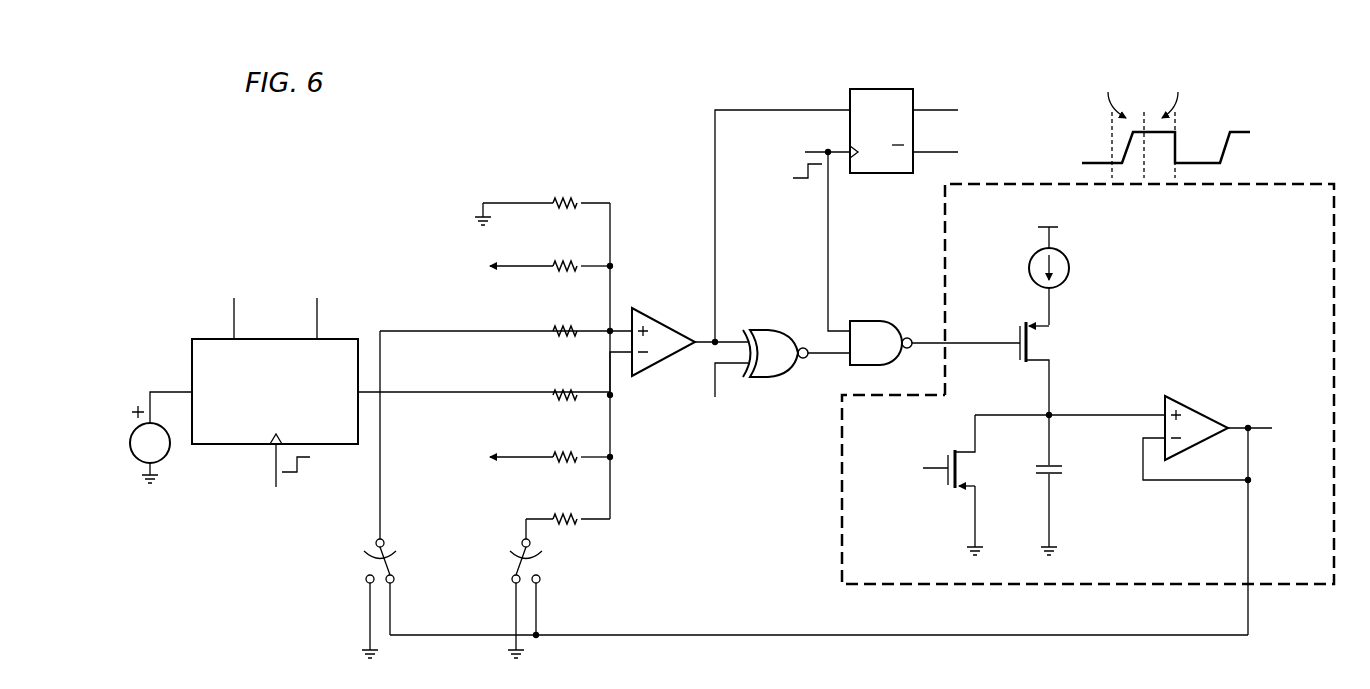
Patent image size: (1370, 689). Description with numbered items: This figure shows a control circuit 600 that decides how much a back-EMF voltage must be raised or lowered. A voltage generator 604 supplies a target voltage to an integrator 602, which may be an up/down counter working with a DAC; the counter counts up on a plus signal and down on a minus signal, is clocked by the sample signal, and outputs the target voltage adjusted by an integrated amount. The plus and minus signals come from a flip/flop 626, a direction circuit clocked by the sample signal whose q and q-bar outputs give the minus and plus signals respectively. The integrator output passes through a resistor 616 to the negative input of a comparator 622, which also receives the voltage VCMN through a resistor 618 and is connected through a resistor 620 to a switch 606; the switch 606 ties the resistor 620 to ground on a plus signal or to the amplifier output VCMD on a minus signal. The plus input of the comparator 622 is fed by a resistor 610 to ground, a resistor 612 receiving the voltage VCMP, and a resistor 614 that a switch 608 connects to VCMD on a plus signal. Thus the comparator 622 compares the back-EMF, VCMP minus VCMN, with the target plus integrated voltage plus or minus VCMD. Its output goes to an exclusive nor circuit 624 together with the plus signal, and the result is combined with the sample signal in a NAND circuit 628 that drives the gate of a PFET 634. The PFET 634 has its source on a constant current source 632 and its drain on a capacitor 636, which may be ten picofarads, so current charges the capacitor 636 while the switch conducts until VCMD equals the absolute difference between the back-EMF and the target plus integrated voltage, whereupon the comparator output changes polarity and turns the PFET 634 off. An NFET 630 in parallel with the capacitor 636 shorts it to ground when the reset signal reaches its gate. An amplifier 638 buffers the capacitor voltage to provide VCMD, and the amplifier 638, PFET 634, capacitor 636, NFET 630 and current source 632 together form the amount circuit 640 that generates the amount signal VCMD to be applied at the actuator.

The control circuit 600 is at (343, 150).
The integrator 602 is at (191, 365).
The voltage generator 604 is at (134, 463).
The switch 606 is at (541, 559).
The switch 608 is at (362, 557).
The resistor 610 is at (560, 200).
The resistor 612 is at (560, 262).
The resistor 614 is at (560, 327).
The resistor 616 is at (560, 391).
The resistor 618 is at (560, 453).
The resistor 620 is at (560, 515).
The comparator 622 is at (684, 306).
The exclusive nor circuit 624 is at (770, 330).
The flip/flop 626 is at (883, 175).
The NAND circuit 628 is at (872, 320).
The NFET 630 is at (946, 481).
The constant current source 632 is at (1070, 268).
The PFET 634 is at (1019, 332).
The capacitor 636 is at (1066, 472).
The buffer amplifier 638 is at (1200, 409).
The ramp generator 640 is at (1258, 238).